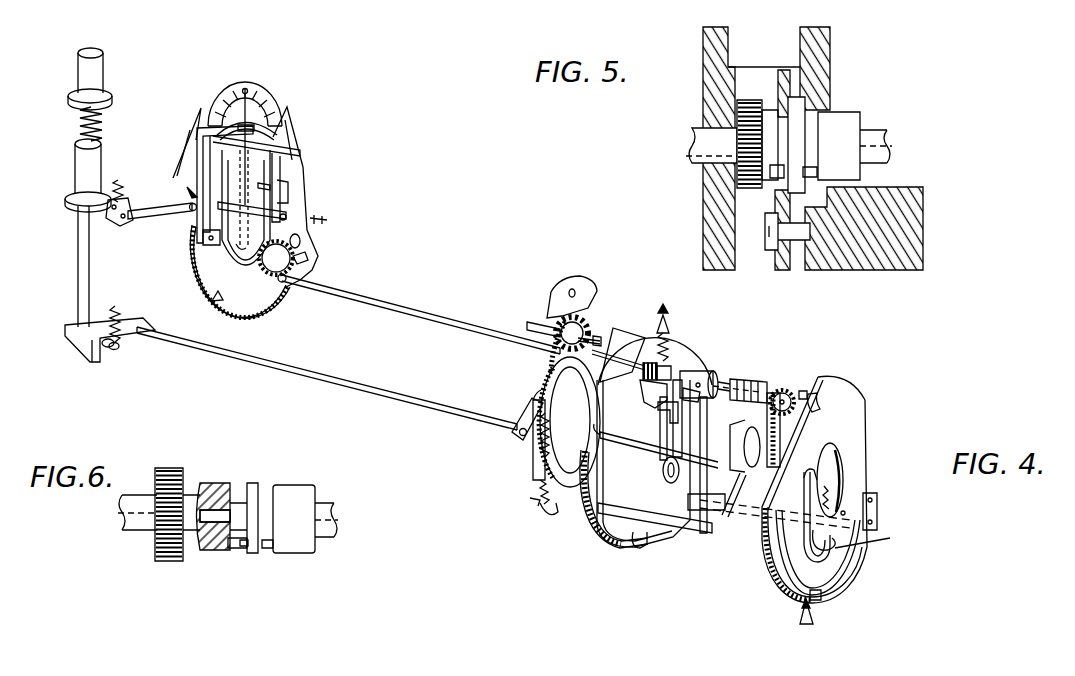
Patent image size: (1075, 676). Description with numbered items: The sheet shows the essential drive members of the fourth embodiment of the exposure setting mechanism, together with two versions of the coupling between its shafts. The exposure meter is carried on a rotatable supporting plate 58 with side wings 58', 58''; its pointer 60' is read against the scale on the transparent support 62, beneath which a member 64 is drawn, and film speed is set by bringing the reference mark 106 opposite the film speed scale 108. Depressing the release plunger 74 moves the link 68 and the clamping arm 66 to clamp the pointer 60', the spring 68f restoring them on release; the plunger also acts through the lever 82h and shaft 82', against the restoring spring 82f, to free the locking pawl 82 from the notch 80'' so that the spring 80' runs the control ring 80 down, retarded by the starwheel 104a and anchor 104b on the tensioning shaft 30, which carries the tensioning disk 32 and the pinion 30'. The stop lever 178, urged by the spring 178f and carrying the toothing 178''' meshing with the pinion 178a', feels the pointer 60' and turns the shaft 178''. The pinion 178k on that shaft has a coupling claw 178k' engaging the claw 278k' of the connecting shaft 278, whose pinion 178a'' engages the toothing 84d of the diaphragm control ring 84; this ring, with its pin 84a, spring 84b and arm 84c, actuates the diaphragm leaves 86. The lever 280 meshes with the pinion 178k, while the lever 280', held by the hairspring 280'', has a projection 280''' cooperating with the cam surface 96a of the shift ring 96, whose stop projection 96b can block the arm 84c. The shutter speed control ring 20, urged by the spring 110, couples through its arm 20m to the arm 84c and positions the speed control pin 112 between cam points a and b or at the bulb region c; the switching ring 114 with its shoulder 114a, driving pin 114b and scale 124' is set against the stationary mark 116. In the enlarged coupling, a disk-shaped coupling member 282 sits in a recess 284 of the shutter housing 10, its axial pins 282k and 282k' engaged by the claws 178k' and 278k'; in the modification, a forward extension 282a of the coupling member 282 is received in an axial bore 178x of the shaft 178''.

In FIG. 4, the release plunger 74 is at (101, 63).
In FIG. 4, the transparent support 62 is at (232, 92).
In FIG. 4, the pointer 60' is at (266, 148).
In FIG. 4, the pointer bracket 64 is at (280, 116).
In FIG. 4, the side wing 58' is at (177, 140).
In FIG. 4, the side wing 58'' is at (307, 135).
In FIG. 4, the clamping arm 66 is at (197, 145).
In FIG. 4, the stop lever 178 is at (311, 220).
In FIG. 4, the spring 68f is at (134, 183).
In FIG. 4, the spring 178f is at (330, 222).
In FIG. 4, the link 68 is at (115, 222).
In FIG. 4, the supporting plate 58 is at (215, 207).
In FIG. 4, the toothing 178''' is at (342, 265).
In FIG. 4, the restoring spring 82f is at (130, 292).
In FIG. 4, the reference mark 106 is at (222, 300).
In FIG. 4, the film speed scale 108 is at (208, 321).
In FIG. 4, the pinion 178a' is at (297, 289).
In FIG. 4, the lever 82h is at (108, 355).
In FIG. 4, the shaft 178'' is at (421, 314).
In FIG. 5, the shaft 178'' is at (692, 130).
In FIG. 6, the shaft 178'' is at (126, 537).
In FIG. 4, the shaft 82' is at (327, 386).
In FIG. 4, the anchor 104b is at (552, 300).
In FIG. 4, the tensioning shaft 30 is at (663, 350).
In FIG. 4, the starwheel 104a is at (588, 320).
In FIG. 4, the pinion 30' is at (555, 356).
In FIG. 4, the pinion 178k is at (655, 333).
In FIG. 5, the pinion 178k is at (714, 128).
In FIG. 6, the pinion 178k is at (159, 495).
In FIG. 4, the coupling claw 178k' is at (692, 335).
In FIG. 5, the coupling claw 178k' is at (716, 186).
In FIG. 6, the coupling claw 178k' is at (237, 565).
In FIG. 4, the coupling claw 278k' is at (724, 356).
In FIG. 5, the coupling claw 278k' is at (873, 157).
In FIG. 6, the coupling claw 278k' is at (312, 543).
In FIG. 4, the connecting shaft 278 is at (730, 388).
In FIG. 5, the connecting shaft 278 is at (872, 146).
In FIG. 6, the connecting shaft 278 is at (326, 524).
In FIG. 4, the diaphragm control ring 84 is at (760, 380).
In FIG. 4, the pinion 178a'' is at (810, 366).
In FIG. 4, the tensioning disk 32 is at (818, 392).
In FIG. 4, the shutter speed control ring 20 is at (850, 384).
In FIG. 4, the lever 280 is at (629, 379).
In FIG. 4, the spring 84b is at (569, 422).
In FIG. 4, the cam surface 96a is at (658, 417).
In FIG. 4, the hairspring 280'' is at (712, 405).
In FIG. 4, the pin 84a is at (590, 442).
In FIG. 4, the toothing 84d is at (781, 431).
In FIG. 4, the shutter speed control pin 112 is at (842, 470).
In FIG. 4, the diaphragm leaves 86 is at (748, 455).
In FIG. 4, the spring 110 is at (836, 500).
In FIG. 4, the projection 280''' is at (656, 448).
In FIG. 4, the locking pawl 82 is at (503, 437).
In FIG. 4, the lever 280' is at (645, 478).
In FIG. 4, the spring 80' is at (521, 490).
In FIG. 4, the notch 80'' is at (508, 509).
In FIG. 4, the control ring 80 is at (541, 457).
In FIG. 4, the scale 124' is at (897, 509).
In FIG. 4, the shift ring 96 is at (586, 522).
In FIG. 4, the stop projection 96b is at (634, 546).
In FIG. 4, the driving pin 114b is at (708, 512).
In FIG. 4, the arm 84c is at (678, 532).
In FIG. 4, the arm 20m is at (722, 512).
In FIG. 4, the switching ring 114 is at (848, 572).
In FIG. 4, the switching shoulder 114a is at (824, 598).
In FIG. 4, the stationary mark 116 is at (814, 626).
In FIG. 4, the cam point a is at (824, 538).
In FIG. 4, the cam point b is at (817, 513).
In FIG. 4, the cam region c is at (868, 537).
In FIG. 5, the shutter housing 10 is at (824, 46).
In FIG. 5, the recess 284 is at (782, 112).
In FIG. 5, the coupling member 282 is at (798, 130).
In FIG. 6, the coupling member 282 is at (252, 483).
In FIG. 5, the axial pin 282k' is at (870, 143).
In FIG. 6, the axial pin 282k' is at (275, 584).
In FIG. 5, the axial pin 282k is at (776, 257).
In FIG. 6, the axial pin 282k is at (243, 472).
In FIG. 6, the axial bore 178x is at (210, 500).
In FIG. 6, the forward extension 282a is at (214, 524).